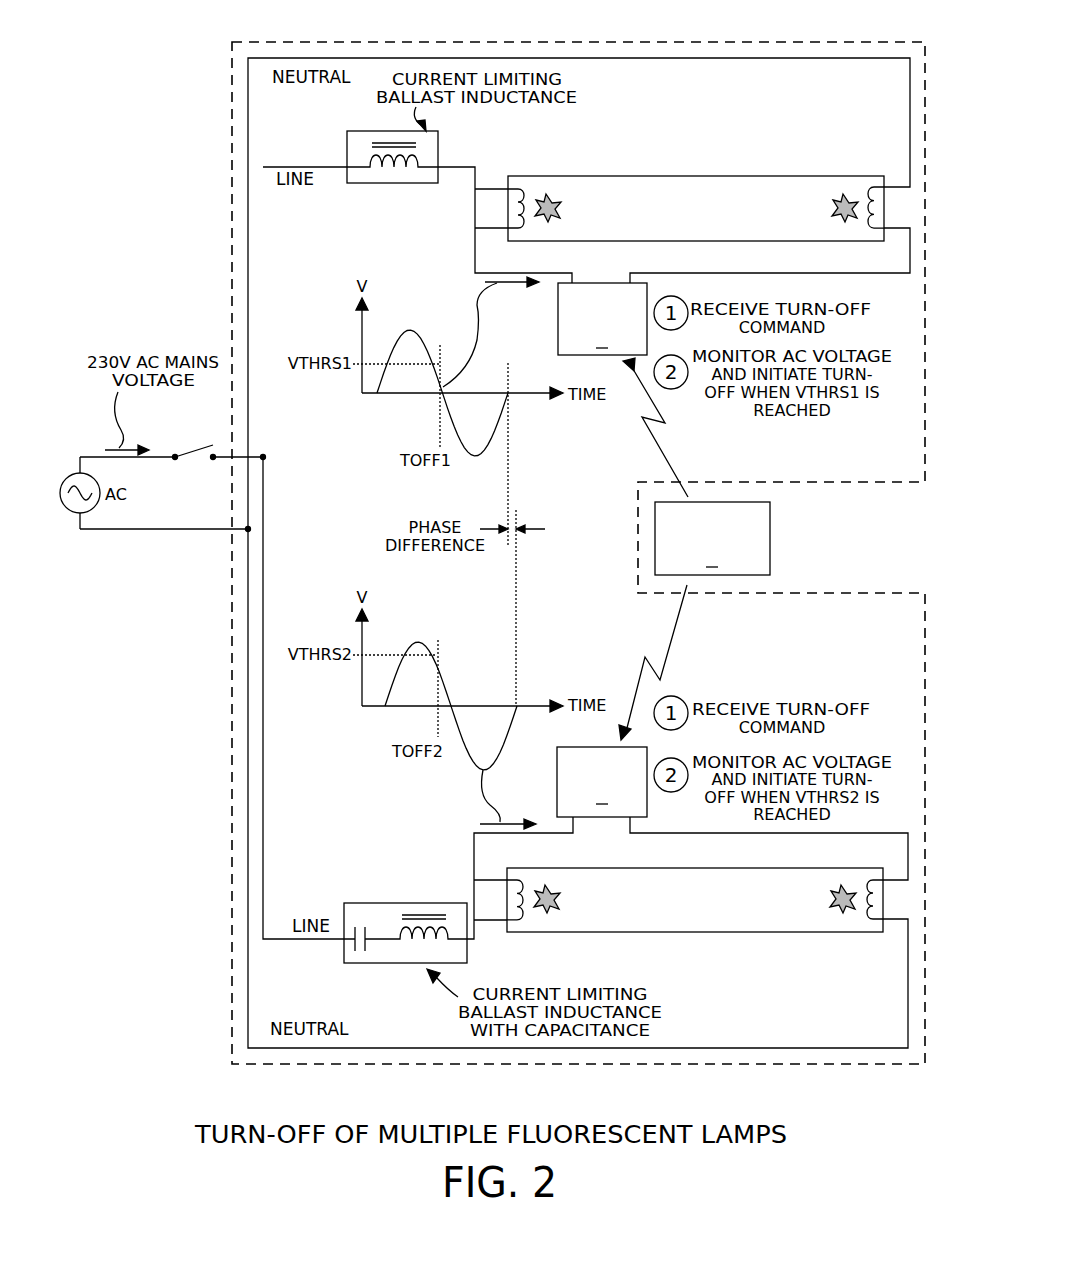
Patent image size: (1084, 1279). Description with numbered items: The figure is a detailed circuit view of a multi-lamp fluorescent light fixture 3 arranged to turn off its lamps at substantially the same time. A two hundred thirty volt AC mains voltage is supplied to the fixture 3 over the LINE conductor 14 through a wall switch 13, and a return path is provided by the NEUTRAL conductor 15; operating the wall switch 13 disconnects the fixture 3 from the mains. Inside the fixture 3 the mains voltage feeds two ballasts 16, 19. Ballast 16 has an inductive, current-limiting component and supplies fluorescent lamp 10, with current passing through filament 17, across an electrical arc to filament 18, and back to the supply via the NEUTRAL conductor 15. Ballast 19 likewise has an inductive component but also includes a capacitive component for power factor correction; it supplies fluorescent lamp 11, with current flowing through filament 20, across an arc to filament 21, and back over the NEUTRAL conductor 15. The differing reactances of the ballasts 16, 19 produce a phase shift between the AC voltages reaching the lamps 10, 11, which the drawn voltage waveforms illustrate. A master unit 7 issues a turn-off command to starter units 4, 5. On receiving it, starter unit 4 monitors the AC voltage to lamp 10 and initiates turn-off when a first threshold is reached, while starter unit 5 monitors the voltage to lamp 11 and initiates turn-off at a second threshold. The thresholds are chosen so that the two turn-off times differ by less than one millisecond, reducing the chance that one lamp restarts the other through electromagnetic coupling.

The multi-lamp fluorescent light fixture 3 is at (713, 41).
The starter unit 4 is at (602, 319).
The starter unit 5 is at (602, 782).
The master unit 7 is at (712, 538).
The fluorescent lamp 10 is at (743, 176).
The fluorescent lamp 11 is at (743, 868).
The wall switch 13 is at (206, 443).
The LINE conductor 14 is at (156, 460).
The NEUTRAL conductor 15 is at (143, 531).
The ballast 16 is at (355, 131).
The filament 17 is at (508, 211).
The filament 18 is at (884, 207).
The ballast 19 is at (355, 903).
The filament 20 is at (507, 899).
The filament 21 is at (883, 899).